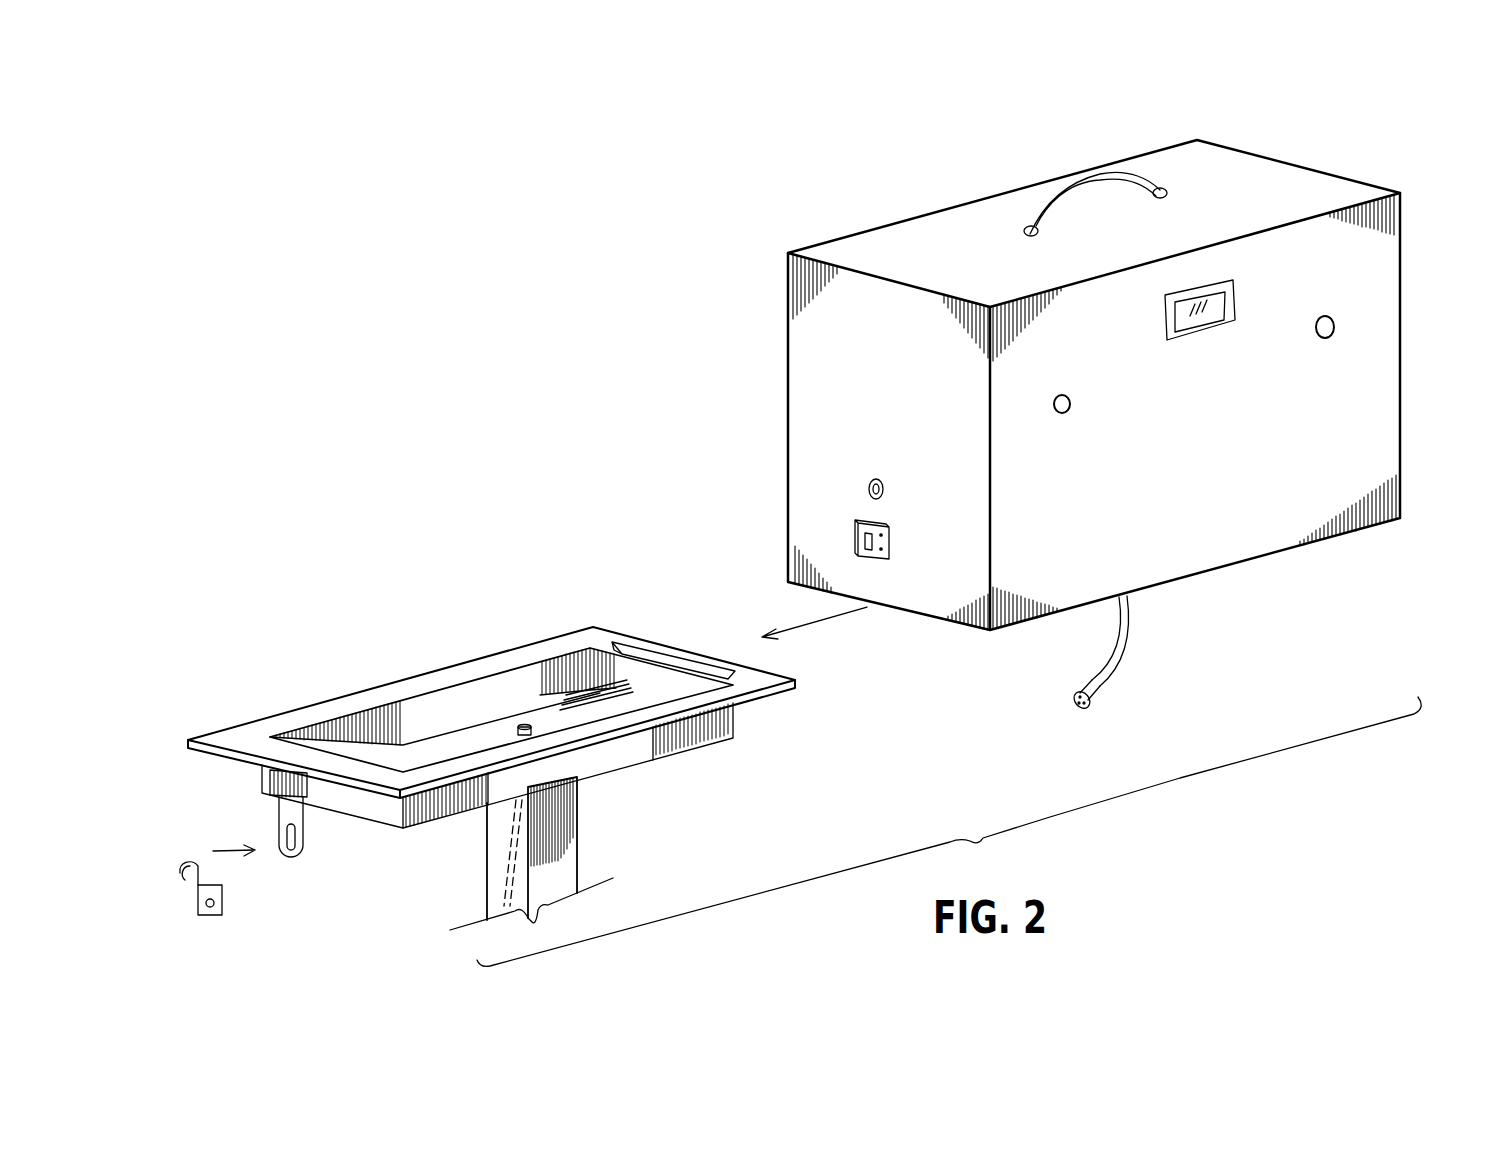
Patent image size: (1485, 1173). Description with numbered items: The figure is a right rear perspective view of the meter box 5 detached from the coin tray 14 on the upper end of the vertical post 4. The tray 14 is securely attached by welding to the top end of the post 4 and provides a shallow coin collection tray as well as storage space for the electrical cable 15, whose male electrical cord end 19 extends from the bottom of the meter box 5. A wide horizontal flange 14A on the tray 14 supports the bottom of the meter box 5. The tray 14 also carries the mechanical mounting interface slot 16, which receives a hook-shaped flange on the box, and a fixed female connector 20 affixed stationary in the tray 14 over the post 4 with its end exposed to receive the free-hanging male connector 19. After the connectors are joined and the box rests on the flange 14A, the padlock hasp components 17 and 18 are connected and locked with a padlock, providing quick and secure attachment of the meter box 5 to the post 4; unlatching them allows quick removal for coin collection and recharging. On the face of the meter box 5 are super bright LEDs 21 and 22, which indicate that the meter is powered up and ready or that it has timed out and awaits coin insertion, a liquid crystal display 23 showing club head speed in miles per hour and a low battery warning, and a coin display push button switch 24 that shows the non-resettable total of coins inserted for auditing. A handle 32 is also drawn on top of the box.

The post 4 is at (562, 832).
The meter box 5 is at (943, 207).
The tray 14 is at (375, 742).
The horizontal flange 14A is at (393, 690).
The electrical cable 15 is at (1128, 638).
The mechanical mounting interface slot 16 is at (657, 643).
The padlock hasp component 17 is at (305, 837).
The padlock hasp component 18 is at (874, 560).
The male electrical cord end 19 is at (1097, 695).
The fixed female connector 20 is at (522, 726).
The LED 21 is at (1070, 412).
The LED 22 is at (1338, 322).
The liquid crystal display 23 is at (1213, 280).
The coin display push button switch 24 is at (863, 480).
The handle 32 is at (1072, 188).